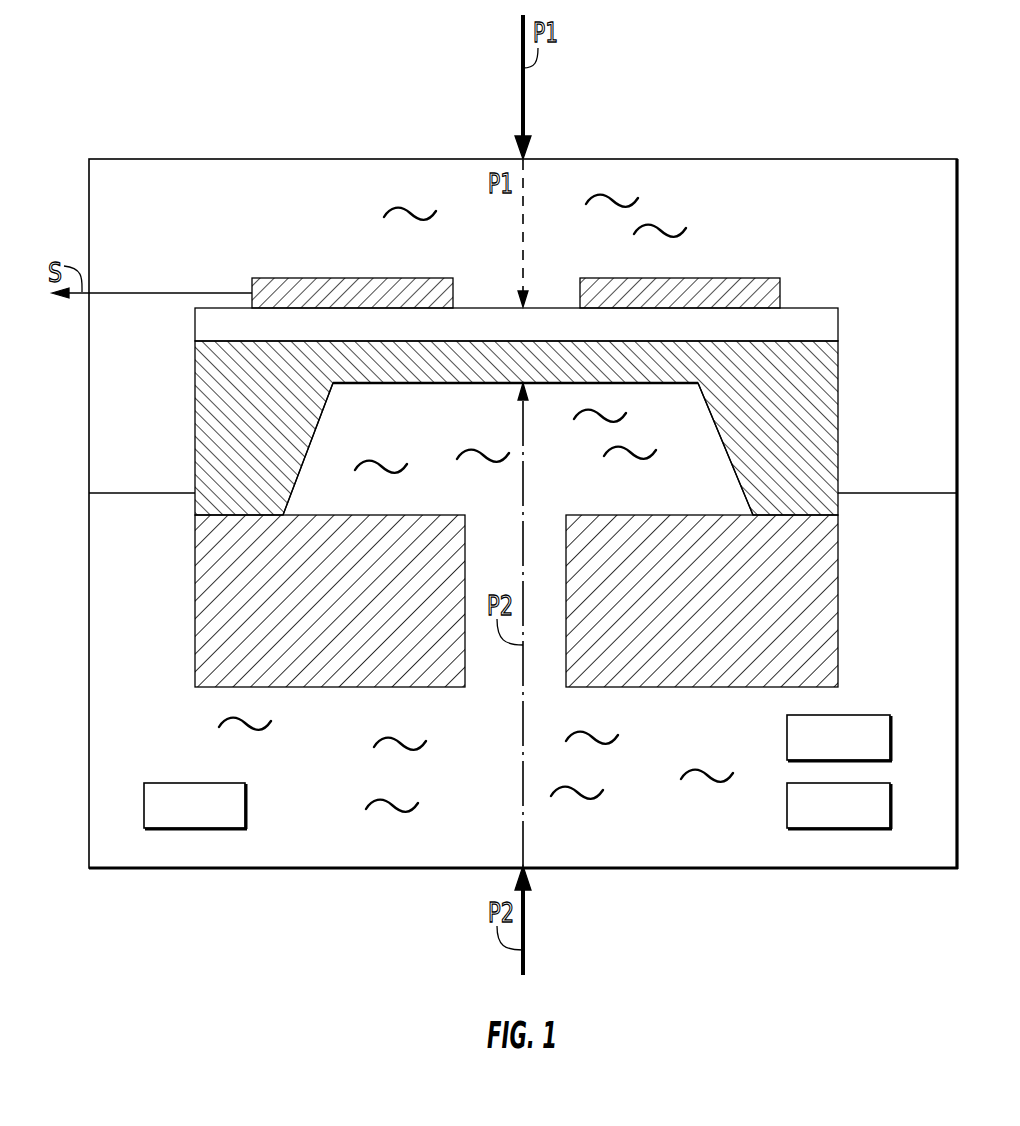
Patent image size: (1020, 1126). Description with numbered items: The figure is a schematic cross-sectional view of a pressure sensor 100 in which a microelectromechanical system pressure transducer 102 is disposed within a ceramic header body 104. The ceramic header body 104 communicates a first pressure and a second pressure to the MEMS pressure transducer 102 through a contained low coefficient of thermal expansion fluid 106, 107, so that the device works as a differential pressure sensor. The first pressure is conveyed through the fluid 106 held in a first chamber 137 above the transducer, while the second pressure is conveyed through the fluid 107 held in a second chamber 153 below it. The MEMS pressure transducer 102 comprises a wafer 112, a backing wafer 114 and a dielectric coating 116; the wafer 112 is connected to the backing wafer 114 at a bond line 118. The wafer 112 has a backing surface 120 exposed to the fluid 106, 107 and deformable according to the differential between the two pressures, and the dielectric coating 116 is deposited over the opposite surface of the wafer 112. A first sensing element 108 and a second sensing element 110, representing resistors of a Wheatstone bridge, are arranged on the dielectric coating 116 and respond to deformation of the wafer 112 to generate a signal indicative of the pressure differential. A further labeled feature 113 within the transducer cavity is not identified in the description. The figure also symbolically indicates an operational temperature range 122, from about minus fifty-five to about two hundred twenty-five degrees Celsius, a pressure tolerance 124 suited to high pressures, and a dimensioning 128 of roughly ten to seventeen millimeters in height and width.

The pressure sensor 100 is at (112, 944).
The MEMS pressure transducer 102 is at (160, 580).
The ceramic header body 104 is at (89, 241).
The fluid 106 is at (657, 232).
The fluid 107 is at (714, 782).
The first sensing element 108 is at (392, 278).
The second sensing element 110 is at (726, 278).
The wafer 112 is at (810, 428).
The cavity 113 is at (624, 396).
The backing wafer 114 is at (818, 577).
The dielectric coating 116 is at (815, 325).
The bond line 118 is at (243, 515).
The backing surface 120 is at (442, 384).
The operational temperature range 122 is at (203, 783).
The pressure tolerance 124 is at (877, 715).
The dimensioning 128 is at (877, 783).
The first chamber 137 is at (146, 202).
The second chamber 153 is at (157, 639).